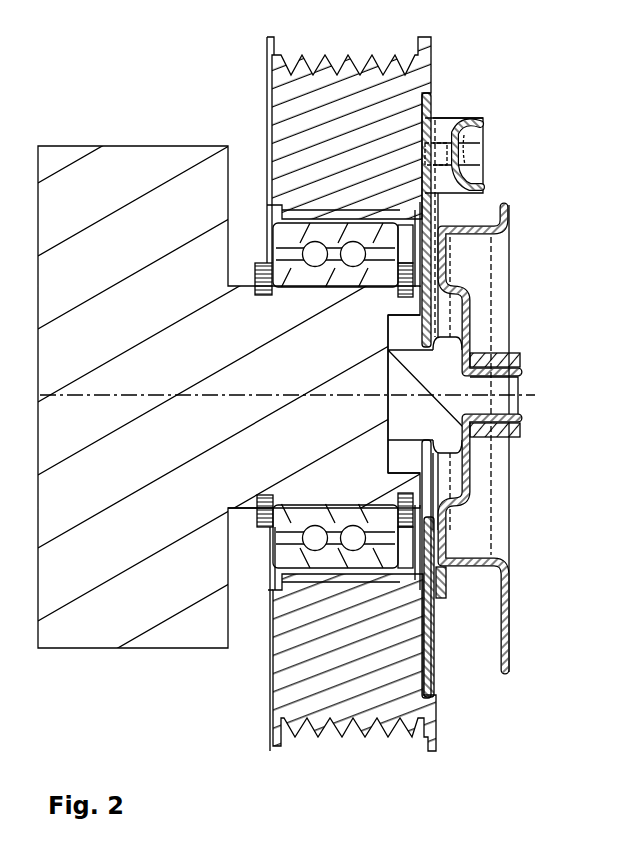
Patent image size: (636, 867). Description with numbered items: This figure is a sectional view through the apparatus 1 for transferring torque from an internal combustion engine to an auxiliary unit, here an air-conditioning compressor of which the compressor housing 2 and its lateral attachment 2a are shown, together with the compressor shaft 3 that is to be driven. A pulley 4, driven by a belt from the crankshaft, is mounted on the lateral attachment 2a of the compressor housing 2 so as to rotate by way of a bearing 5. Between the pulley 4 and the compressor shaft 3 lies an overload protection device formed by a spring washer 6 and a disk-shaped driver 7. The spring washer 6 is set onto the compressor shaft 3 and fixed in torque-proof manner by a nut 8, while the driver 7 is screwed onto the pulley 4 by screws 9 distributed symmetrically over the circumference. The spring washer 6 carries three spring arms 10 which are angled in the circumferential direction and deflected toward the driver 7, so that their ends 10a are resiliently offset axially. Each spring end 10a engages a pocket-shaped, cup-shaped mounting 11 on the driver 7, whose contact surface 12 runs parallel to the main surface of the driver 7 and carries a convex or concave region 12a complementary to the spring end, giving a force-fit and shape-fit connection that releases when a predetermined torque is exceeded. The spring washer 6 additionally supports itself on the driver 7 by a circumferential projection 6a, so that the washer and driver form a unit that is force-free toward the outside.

The apparatus 1 is at (176, 86).
The compressor housing 2 is at (152, 649).
The lateral attachment 2a is at (290, 561).
The compressor shaft 3 is at (453, 405).
The pulley 4 is at (425, 90).
The bearing 5 is at (269, 575).
The spring washer 6 is at (467, 304).
The circumferential projection 6a is at (441, 542).
The disk-shaped driver 7 is at (427, 226).
The nut 8 is at (507, 362).
The screws 9 is at (452, 589).
The spring arms 10 is at (528, 114).
The spring arm ends 10a is at (473, 118).
The pocket-shaped mounting 11 is at (458, 110).
The contact surface 12 is at (465, 153).
The convex or concave region 12a is at (526, 149).